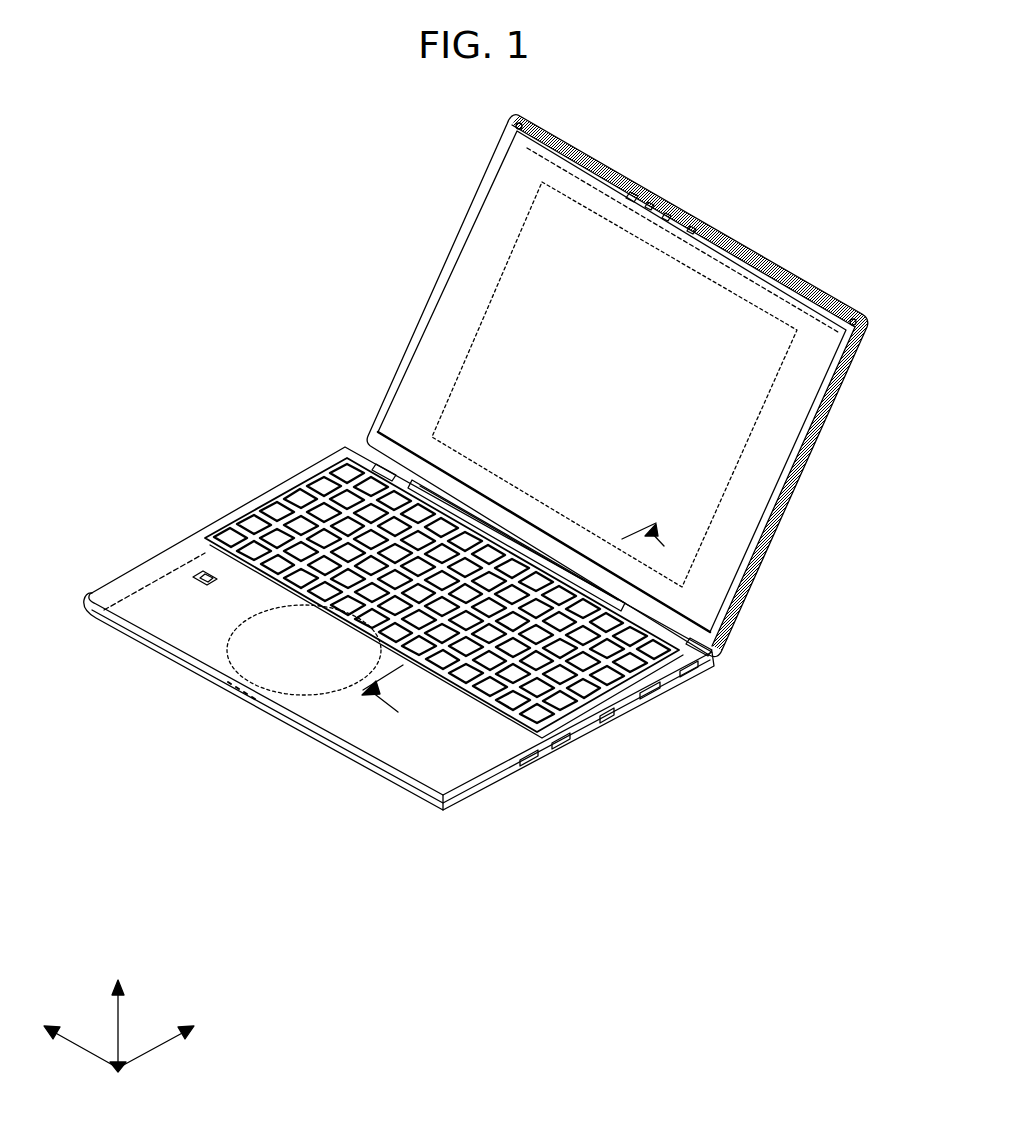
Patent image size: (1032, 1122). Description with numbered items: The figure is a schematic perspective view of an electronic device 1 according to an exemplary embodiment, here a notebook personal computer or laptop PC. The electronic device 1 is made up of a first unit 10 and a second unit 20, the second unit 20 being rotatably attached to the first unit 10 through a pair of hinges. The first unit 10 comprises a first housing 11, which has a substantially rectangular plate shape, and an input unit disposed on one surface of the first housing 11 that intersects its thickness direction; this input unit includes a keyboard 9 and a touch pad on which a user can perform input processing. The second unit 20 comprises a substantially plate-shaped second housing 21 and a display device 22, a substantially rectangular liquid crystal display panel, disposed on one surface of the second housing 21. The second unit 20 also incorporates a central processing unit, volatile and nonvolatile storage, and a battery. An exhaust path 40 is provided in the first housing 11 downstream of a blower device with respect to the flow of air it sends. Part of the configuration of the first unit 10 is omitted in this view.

The electronic device 1 is at (256, 226).
The keyboard 9 is at (283, 510).
The first unit 10 is at (379, 769).
The first housing 11 is at (200, 625).
The second unit 20 is at (818, 438).
The second housing 21 is at (762, 262).
The display device 22 is at (530, 293).
The exhaust path 40 is at (480, 528).